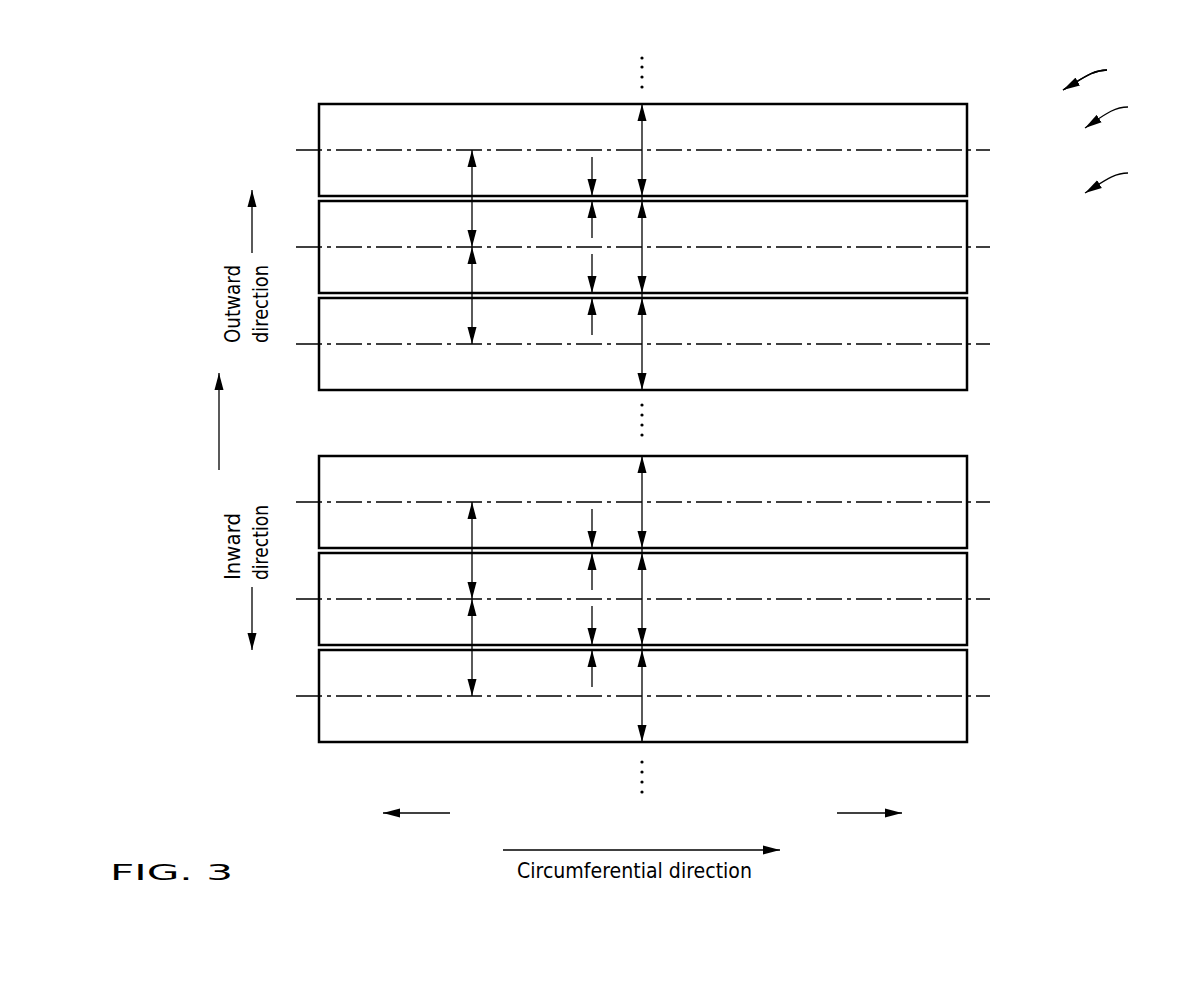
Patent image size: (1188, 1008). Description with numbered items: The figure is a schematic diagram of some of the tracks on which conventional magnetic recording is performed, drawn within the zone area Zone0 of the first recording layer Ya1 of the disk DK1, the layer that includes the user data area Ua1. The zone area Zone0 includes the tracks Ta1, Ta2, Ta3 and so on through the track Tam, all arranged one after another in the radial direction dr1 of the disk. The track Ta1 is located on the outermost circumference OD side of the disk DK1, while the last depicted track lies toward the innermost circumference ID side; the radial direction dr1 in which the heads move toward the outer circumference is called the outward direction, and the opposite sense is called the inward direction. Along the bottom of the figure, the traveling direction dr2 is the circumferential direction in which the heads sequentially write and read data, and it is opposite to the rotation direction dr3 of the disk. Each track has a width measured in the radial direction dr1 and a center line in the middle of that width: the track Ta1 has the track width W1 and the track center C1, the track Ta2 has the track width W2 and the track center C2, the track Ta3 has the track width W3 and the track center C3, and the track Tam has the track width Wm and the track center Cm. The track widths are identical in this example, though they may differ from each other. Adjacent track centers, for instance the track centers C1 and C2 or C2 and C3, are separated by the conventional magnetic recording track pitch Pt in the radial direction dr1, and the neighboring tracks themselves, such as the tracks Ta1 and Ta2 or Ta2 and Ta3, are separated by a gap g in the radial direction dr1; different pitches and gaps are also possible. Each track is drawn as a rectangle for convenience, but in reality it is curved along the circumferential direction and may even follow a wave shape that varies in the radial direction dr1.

The track Ta1 is at (957, 129).
The track Ta2 is at (957, 226).
The track Ta3 is at (957, 323).
The track Tam is at (957, 578).
The track center C1 is at (832, 150).
The track center C2 is at (795, 247).
The track center C3 is at (832, 344).
The track center Cm is at (795, 599).
The track width W1 is at (648, 138).
The track width W2 is at (648, 235).
The track width W3 is at (648, 332).
The track width Wm is at (648, 587).
The pitch Pt is at (470, 181).
The gap g is at (589, 197).
The outermost circumference OD is at (381, 86).
The innermost circumference ID is at (380, 780).
The radial direction dr1 is at (218, 425).
The traveling direction dr2 is at (869, 829).
The rotation direction dr3 is at (416, 829).
The disk DK1 is at (1087, 66).
The first recording layer Ya1 is at (1107, 66).
The user data area Ua1 is at (1116, 101).
The zone area Zone0 is at (1122, 168).